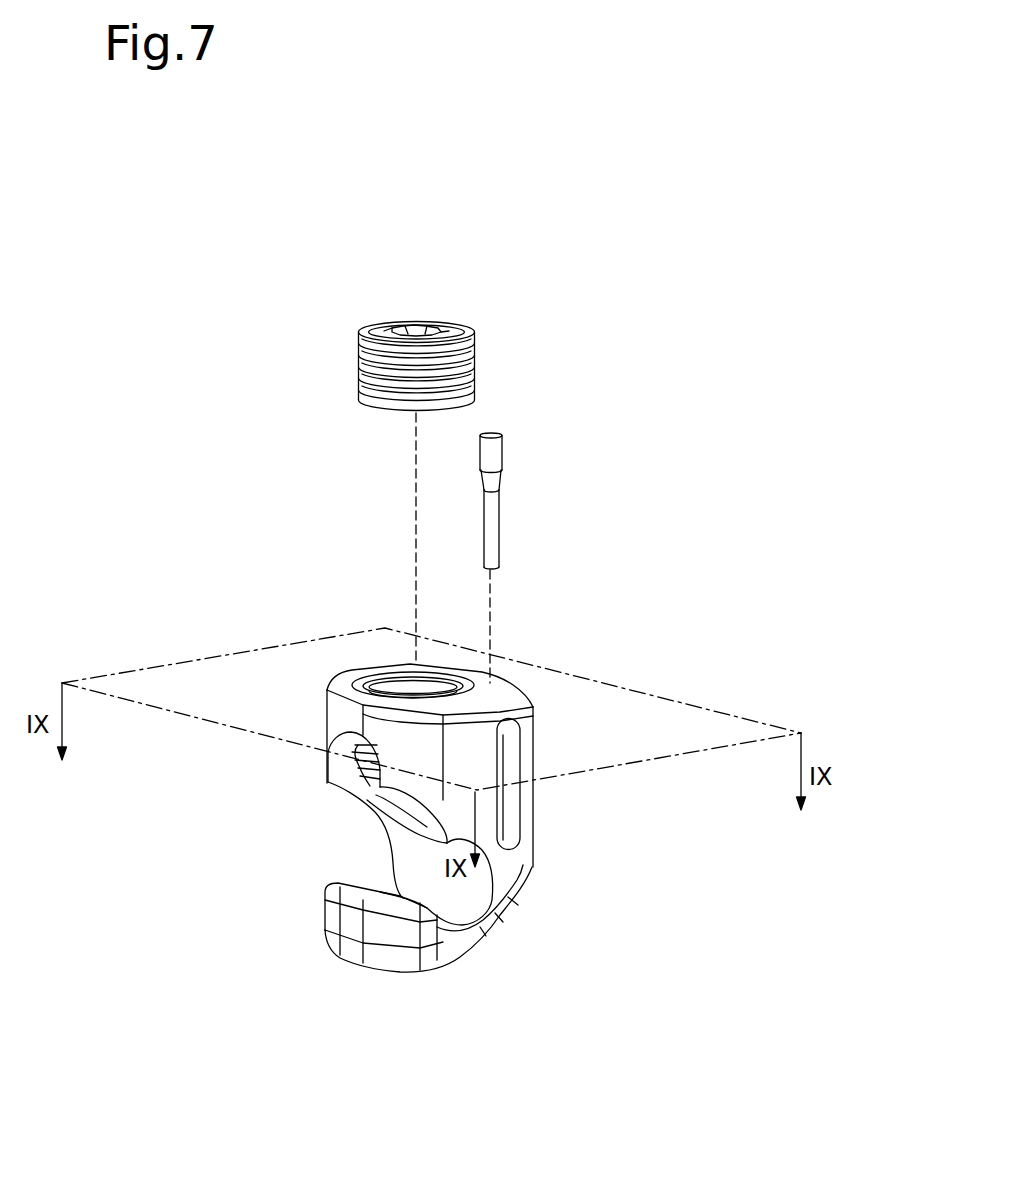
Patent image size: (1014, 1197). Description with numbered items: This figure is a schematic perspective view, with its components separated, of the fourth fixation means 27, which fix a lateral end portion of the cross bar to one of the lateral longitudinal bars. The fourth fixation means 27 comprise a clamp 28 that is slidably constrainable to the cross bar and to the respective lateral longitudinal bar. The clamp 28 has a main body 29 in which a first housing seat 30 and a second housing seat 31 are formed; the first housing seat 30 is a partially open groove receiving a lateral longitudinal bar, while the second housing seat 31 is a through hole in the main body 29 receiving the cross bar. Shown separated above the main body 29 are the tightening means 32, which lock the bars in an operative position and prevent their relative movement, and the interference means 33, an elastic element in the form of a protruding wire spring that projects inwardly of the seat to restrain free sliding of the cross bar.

The fourth fixation means 27 is at (640, 552).
The clamp 28 is at (513, 880).
The main body 29 is at (345, 697).
The first housing seat 30 is at (457, 897).
The second housing seat 31 is at (347, 750).
The tightening means 32 is at (466, 322).
The interference means 33 is at (526, 451).